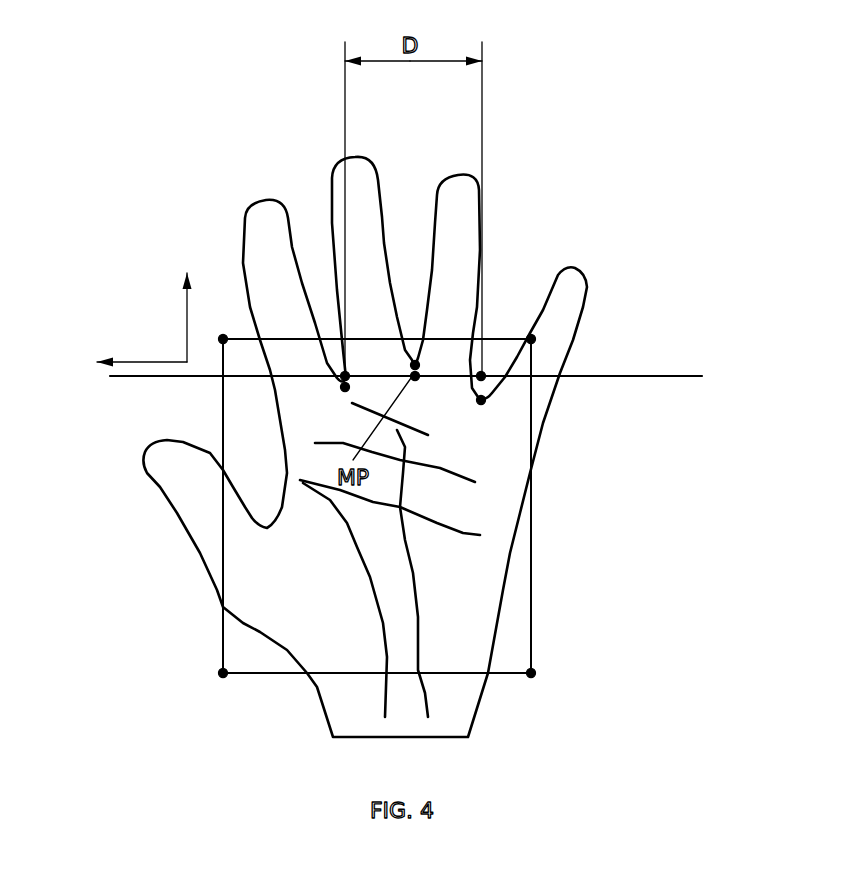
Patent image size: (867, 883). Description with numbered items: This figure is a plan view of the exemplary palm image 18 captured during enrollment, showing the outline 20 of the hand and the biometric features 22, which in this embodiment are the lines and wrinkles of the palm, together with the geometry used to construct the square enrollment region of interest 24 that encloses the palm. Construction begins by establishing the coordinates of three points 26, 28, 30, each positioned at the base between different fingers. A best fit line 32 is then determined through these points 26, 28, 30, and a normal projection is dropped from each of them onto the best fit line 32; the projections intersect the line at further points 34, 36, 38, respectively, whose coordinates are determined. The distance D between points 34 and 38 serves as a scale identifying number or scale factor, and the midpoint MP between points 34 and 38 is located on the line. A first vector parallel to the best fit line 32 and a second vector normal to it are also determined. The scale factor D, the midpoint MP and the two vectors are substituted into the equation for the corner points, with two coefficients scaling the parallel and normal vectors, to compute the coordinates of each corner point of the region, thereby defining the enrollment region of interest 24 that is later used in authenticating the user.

The palm image 18 is at (143, 263).
The outline 20 is at (518, 548).
The biometric features 22 is at (435, 523).
The enrollment region of interest 24 is at (223, 417).
The point 26 is at (345, 387).
The point 28 is at (415, 365).
The point 30 is at (481, 400).
The best fit line 32 is at (685, 373).
The point 34 is at (345, 376).
The point 36 is at (415, 376).
The point 38 is at (481, 376).